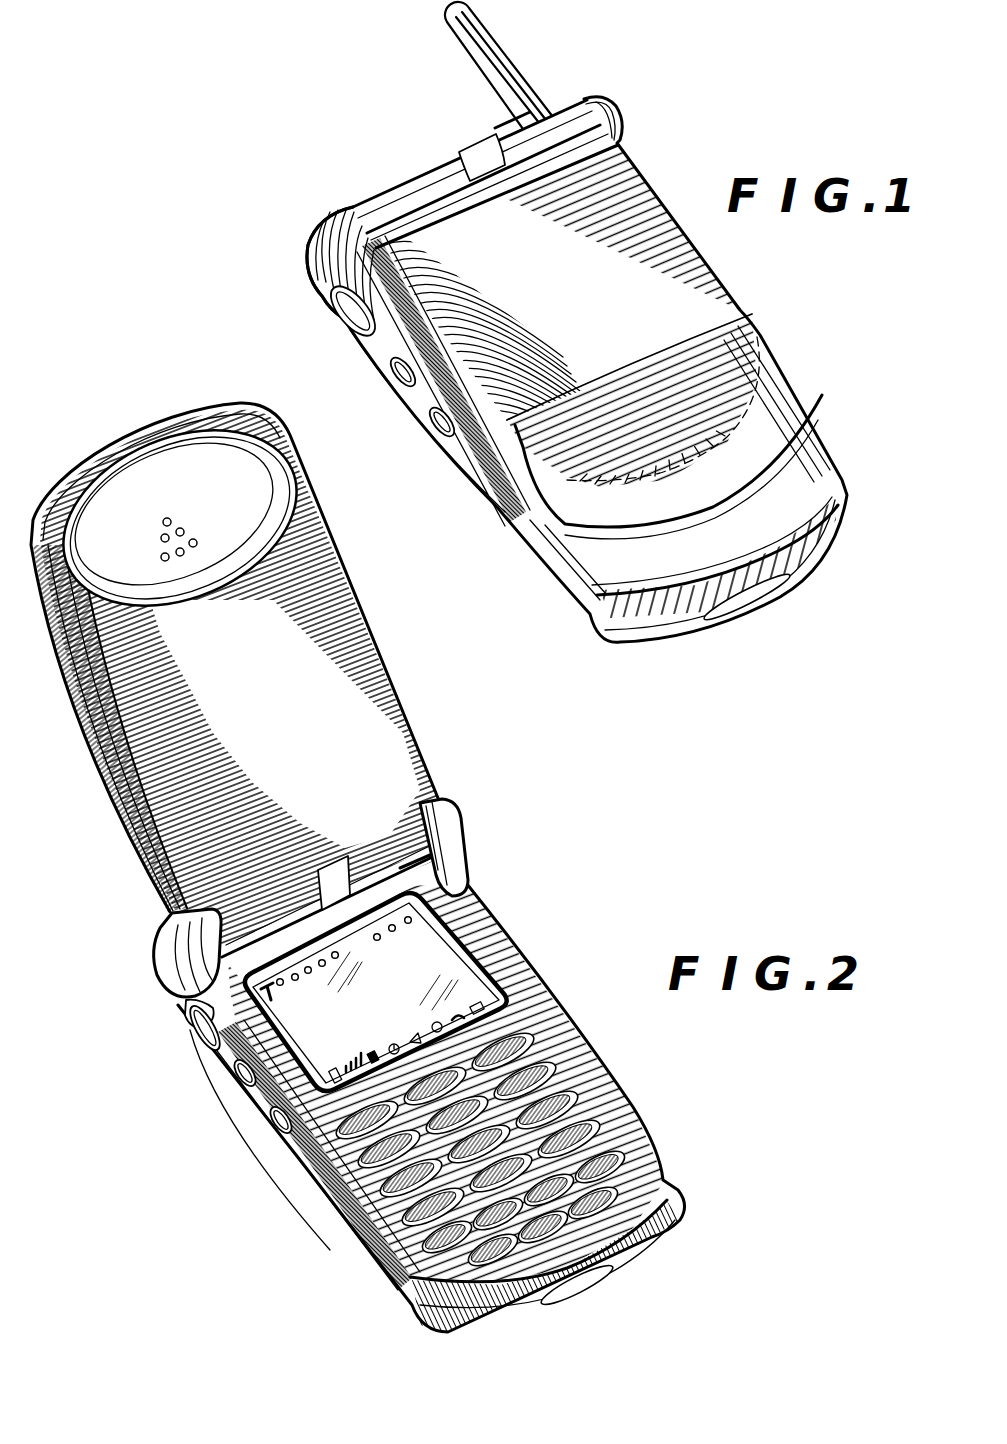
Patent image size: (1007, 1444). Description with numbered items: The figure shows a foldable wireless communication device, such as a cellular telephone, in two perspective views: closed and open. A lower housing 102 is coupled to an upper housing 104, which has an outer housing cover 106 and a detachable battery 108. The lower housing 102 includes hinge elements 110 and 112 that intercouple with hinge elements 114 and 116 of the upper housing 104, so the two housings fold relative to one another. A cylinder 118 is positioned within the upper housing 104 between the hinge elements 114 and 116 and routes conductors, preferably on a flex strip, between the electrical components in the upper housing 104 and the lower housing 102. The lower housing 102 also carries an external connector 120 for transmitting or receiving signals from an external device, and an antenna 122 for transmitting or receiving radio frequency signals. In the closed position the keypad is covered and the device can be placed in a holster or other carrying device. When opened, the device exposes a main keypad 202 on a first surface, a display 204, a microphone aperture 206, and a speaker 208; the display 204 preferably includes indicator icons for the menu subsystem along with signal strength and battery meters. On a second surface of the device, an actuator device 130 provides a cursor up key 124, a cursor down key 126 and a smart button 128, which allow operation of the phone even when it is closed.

In FIG. 1, the lower housing 102 is at (850, 510).
In FIG. 2, the lower housing 102 is at (648, 1140).
In FIG. 1, the upper housing 104 is at (823, 437).
In FIG. 2, the upper housing 104 is at (370, 633).
In FIG. 1, the outer housing cover 106 is at (775, 345).
In FIG. 1, the detachable battery 108 is at (615, 200).
In FIG. 1, the hinge element 110 is at (318, 226).
In FIG. 2, the hinge element 110 is at (163, 927).
In FIG. 1, the hinge element 112 is at (603, 100).
In FIG. 2, the hinge element 112 is at (448, 802).
In FIG. 1, the hinge element 114 is at (380, 188).
In FIG. 2, the hinge element 114 is at (196, 1013).
In FIG. 1, the hinge element 116 is at (507, 127).
In FIG. 2, the hinge element 116 is at (413, 870).
In FIG. 1, the cylinder 118 is at (457, 148).
In FIG. 2, the cylinder 118 is at (313, 905).
In FIG. 1, the external connector 120 is at (763, 600).
In FIG. 2, the external connector 120 is at (600, 1282).
In FIG. 1, the antenna 122 is at (510, 40).
In FIG. 1, the cursor up key 124 is at (340, 335).
In FIG. 2, the cursor up key 124 is at (200, 1040).
In FIG. 1, the cursor down key 126 is at (440, 428).
In FIG. 2, the cursor down key 126 is at (281, 1128).
In FIG. 1, the smart button 128 is at (397, 377).
In FIG. 2, the smart button 128 is at (243, 1082).
In FIG. 1, the actuator device 130 is at (330, 316).
In FIG. 2, the actuator device 130 is at (215, 1085).
In FIG. 2, the main keypad 202 is at (570, 1100).
In FIG. 2, the display 204 is at (455, 985).
In FIG. 2, the microphone aperture 206 is at (410, 1278).
In FIG. 2, the speaker 208 is at (280, 577).